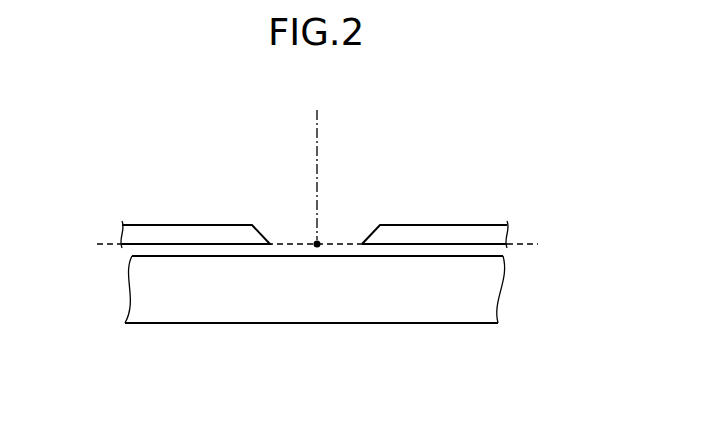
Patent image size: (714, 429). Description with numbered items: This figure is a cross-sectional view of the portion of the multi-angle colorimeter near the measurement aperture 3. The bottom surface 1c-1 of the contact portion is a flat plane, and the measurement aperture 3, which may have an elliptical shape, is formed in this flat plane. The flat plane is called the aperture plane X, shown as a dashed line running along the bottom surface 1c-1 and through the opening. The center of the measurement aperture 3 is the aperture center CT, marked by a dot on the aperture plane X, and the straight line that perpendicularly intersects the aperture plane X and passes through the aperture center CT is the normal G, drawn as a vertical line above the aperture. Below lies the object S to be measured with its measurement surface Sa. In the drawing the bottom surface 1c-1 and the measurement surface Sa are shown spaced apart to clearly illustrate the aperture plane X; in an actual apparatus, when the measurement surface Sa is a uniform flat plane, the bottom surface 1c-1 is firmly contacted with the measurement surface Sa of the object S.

The measurement aperture 3 is at (356, 221).
The bottom surface 1c-1 is at (161, 256).
The object to be measured S is at (341, 241).
The measurement surface Sa is at (290, 256).
The aperture center CT is at (316, 243).
The normal G is at (317, 160).
The aperture plane X is at (326, 244).